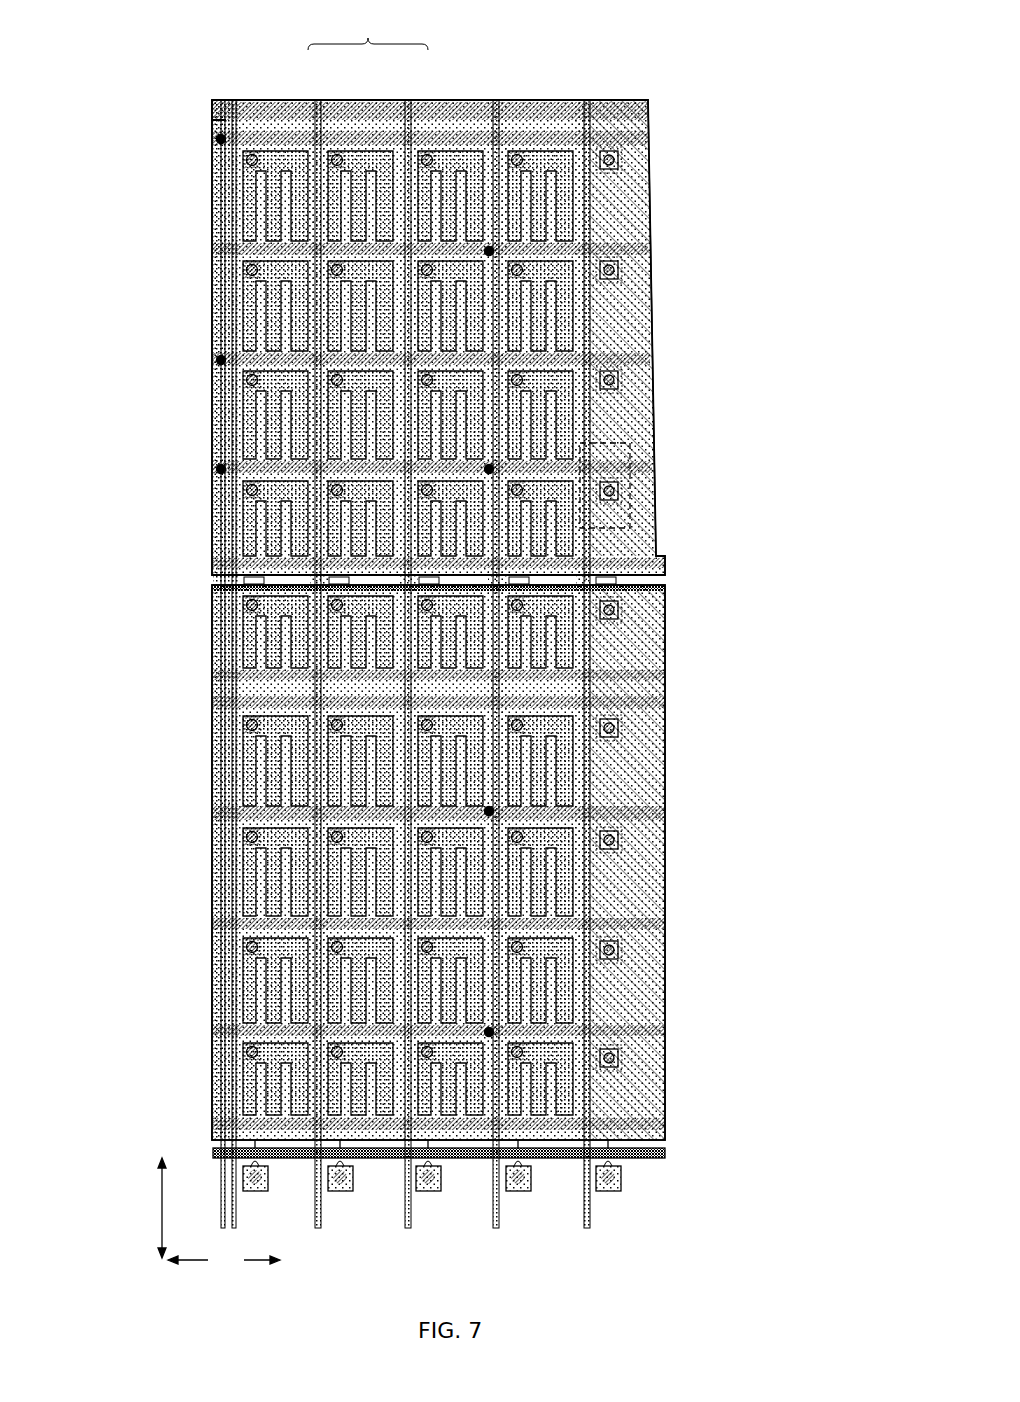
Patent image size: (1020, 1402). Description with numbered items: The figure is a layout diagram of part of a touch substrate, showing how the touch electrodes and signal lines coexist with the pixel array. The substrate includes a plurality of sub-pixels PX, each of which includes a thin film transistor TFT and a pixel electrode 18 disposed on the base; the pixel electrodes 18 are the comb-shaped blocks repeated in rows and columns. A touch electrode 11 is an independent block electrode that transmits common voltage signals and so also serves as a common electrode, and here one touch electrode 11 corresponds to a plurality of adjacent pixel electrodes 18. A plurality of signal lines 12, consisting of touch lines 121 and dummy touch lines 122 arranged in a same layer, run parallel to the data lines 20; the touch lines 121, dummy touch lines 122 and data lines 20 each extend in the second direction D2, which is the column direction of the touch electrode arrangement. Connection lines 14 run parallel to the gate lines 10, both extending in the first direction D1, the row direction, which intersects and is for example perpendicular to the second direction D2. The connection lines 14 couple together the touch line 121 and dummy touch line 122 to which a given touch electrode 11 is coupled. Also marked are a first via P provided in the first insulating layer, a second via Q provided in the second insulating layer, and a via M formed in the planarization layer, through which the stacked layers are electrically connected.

The signal line 12 is at (368, 31).
The touch line 121 is at (218, 92).
The dummy touch line 122 is at (478, 92).
The connection line 14 is at (520, 108).
The gate line 10 is at (595, 128).
The via M is at (612, 258).
The touch electrode 11 is at (620, 396).
The thin film transistor TFT is at (622, 491).
The second via Q is at (205, 108).
The first via P is at (208, 132).
The data line 20 is at (230, 275).
The pixel electrode 18 is at (243, 311).
The sub-pixel PX is at (318, 413).
The first direction D1 is at (224, 1263).
The second direction D2 is at (163, 1208).